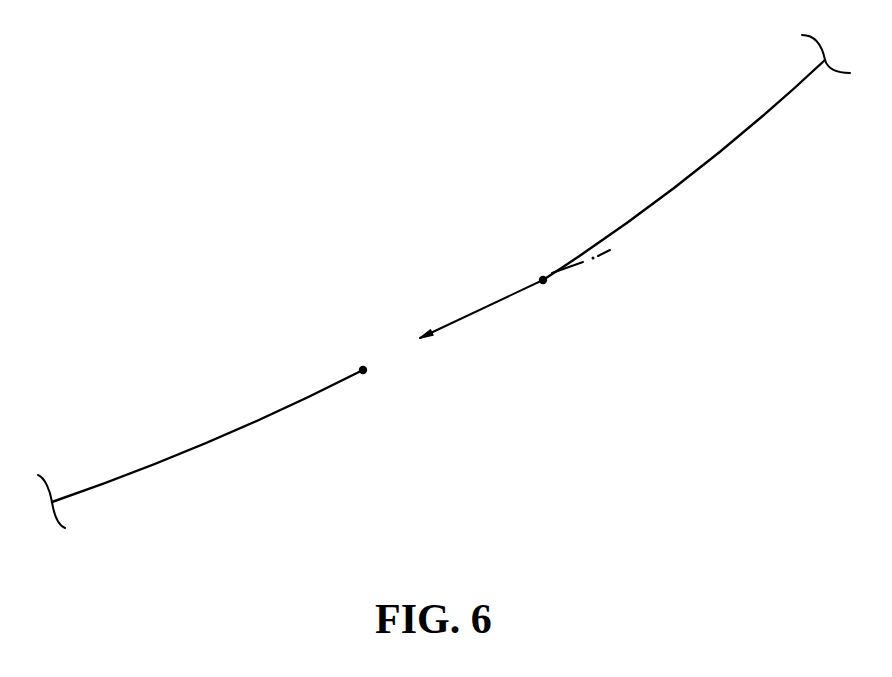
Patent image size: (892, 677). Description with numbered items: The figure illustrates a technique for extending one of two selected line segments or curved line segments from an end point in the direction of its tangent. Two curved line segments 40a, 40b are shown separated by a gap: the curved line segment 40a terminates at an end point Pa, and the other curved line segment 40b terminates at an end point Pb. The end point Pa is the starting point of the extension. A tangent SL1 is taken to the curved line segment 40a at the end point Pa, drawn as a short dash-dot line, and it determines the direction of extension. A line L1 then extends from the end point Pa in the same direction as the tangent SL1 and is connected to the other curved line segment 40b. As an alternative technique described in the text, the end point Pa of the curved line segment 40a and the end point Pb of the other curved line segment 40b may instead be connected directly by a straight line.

The curved line segment 40a is at (712, 157).
The other curved line segment 40b is at (242, 427).
The line L1 is at (468, 313).
The tangent SL1 is at (606, 252).
The end point Pa is at (545, 283).
The end point Pb is at (362, 369).